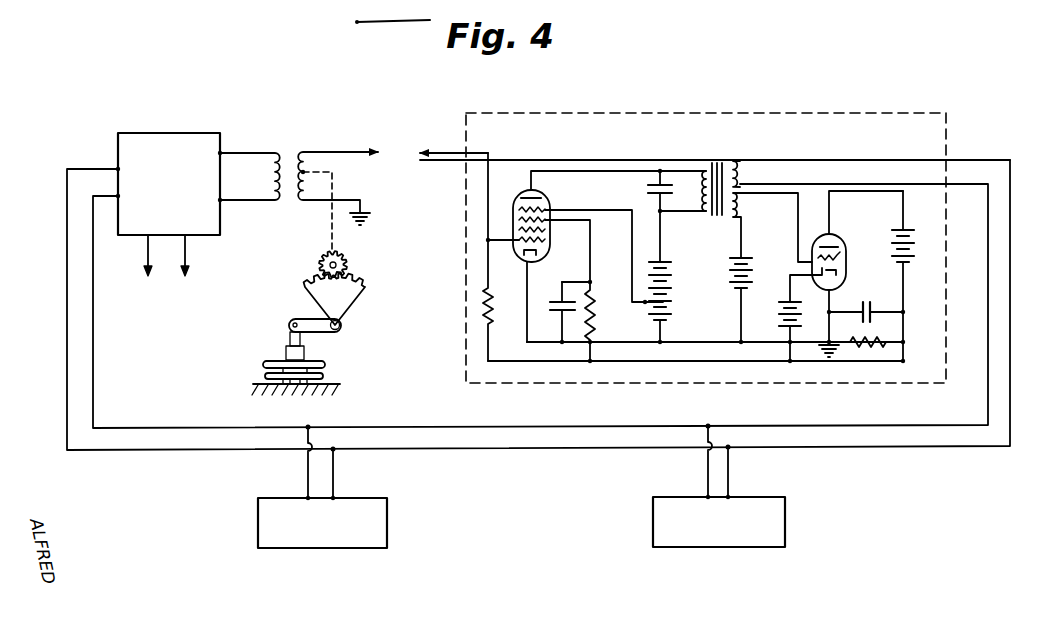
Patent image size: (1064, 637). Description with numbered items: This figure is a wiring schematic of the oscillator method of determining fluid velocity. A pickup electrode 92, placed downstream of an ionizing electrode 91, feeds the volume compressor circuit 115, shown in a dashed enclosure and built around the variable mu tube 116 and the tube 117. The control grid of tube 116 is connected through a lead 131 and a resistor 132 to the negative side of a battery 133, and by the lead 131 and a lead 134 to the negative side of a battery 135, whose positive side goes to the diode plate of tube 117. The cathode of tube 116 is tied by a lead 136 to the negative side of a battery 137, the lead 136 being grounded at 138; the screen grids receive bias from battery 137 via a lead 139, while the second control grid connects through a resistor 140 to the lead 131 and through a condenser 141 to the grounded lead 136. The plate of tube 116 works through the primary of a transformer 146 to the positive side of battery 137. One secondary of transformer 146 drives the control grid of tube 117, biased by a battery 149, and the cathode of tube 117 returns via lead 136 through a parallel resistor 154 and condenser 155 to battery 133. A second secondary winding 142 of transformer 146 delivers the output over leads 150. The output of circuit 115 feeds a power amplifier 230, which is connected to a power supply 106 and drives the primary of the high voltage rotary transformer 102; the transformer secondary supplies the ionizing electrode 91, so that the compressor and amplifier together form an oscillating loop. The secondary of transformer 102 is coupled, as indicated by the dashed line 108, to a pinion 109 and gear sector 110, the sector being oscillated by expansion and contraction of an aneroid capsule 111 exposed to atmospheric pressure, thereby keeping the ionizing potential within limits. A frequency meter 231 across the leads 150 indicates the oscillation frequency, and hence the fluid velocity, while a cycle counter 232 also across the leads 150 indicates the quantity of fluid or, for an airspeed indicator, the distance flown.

The ionizing electrode 91 is at (358, 148).
The pickup electrode 92 is at (422, 146).
The high voltage rotary transformer 102 is at (308, 144).
The source of power supply 106 is at (166, 255).
The coupling means 108 is at (330, 240).
The pinion 109 is at (348, 263).
The gear sector 110 is at (350, 302).
The aneroid capsule 111 is at (327, 374).
The volume compressor circuit 115 is at (735, 107).
The variable mu tube 116 is at (548, 203).
The tube 117 is at (840, 242).
The lead 131 is at (655, 362).
The resistor 132 is at (500, 308).
The battery 133 is at (914, 264).
The lead 134 is at (786, 330).
The battery 135 is at (786, 304).
The lead 136 is at (708, 342).
The battery 137 is at (672, 310).
The ground 138 is at (822, 358).
The lead 139 is at (632, 237).
The resistor 140 is at (596, 308).
The condenser 141 is at (556, 300).
The second secondary winding 142 is at (737, 173).
The transformer 146 is at (734, 161).
The battery 149 is at (730, 264).
The leads 150 is at (93, 340).
The resistor 154 is at (886, 340).
The condenser 155 is at (866, 300).
The power amplifier 230 is at (168, 142).
The frequency meter 231 is at (718, 547).
The cycle counter 232 is at (316, 548).